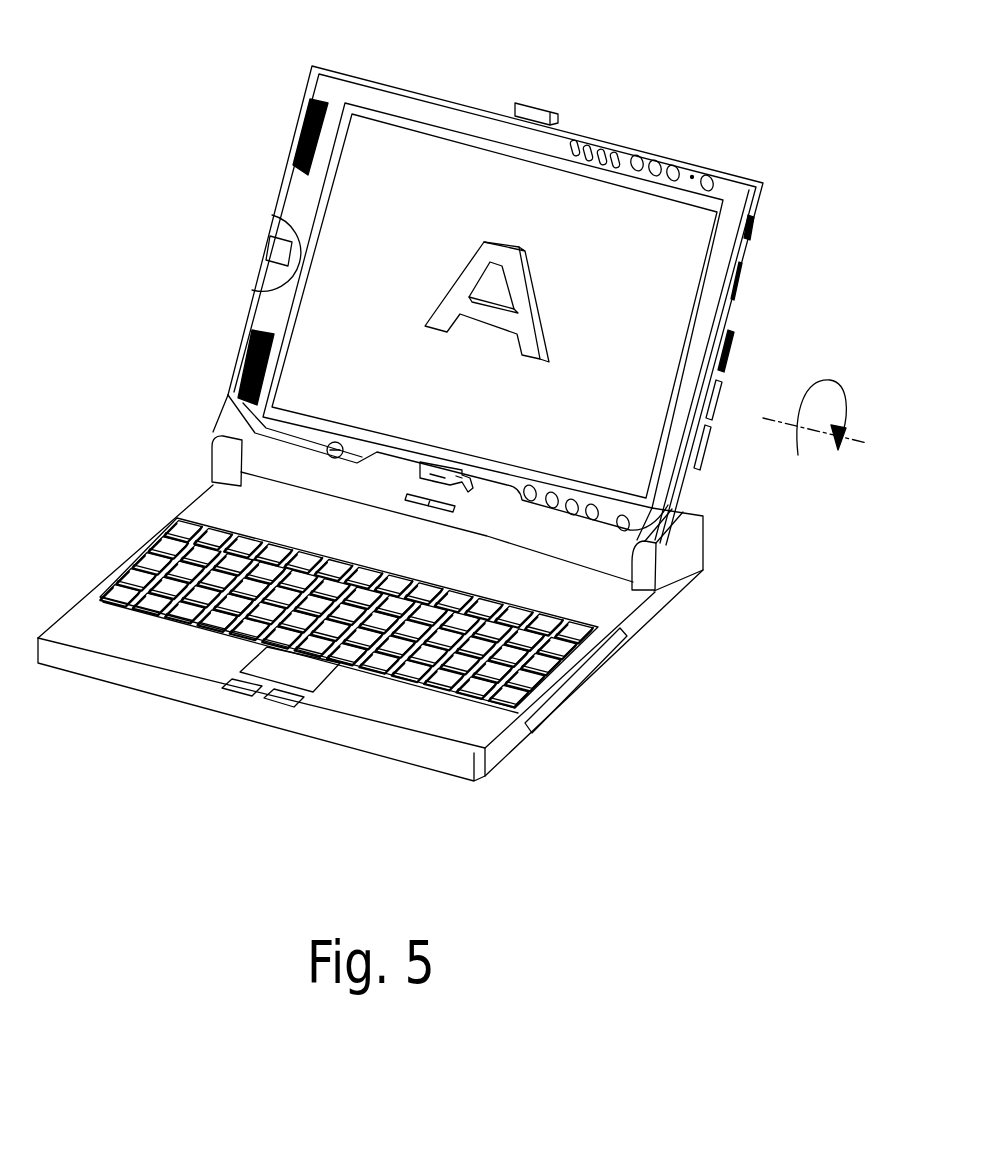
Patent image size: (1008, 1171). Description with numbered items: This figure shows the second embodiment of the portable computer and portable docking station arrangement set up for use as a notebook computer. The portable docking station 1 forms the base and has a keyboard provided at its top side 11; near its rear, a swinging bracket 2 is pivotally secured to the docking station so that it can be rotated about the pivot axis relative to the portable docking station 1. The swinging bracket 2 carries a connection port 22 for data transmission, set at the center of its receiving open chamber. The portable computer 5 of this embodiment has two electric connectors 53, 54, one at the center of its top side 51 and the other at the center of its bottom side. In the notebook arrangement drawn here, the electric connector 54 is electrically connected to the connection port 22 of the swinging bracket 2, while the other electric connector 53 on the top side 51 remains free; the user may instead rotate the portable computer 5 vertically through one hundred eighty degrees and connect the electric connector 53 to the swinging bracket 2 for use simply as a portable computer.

The portable docking station 1 is at (483, 728).
The top side 11 is at (542, 667).
The swinging bracket 2 is at (603, 560).
The connection port 22 is at (407, 493).
The portable computer 5 is at (427, 110).
The top side 51 is at (369, 80).
The electric connector 53 is at (540, 104).
The electric connector 54 is at (420, 470).